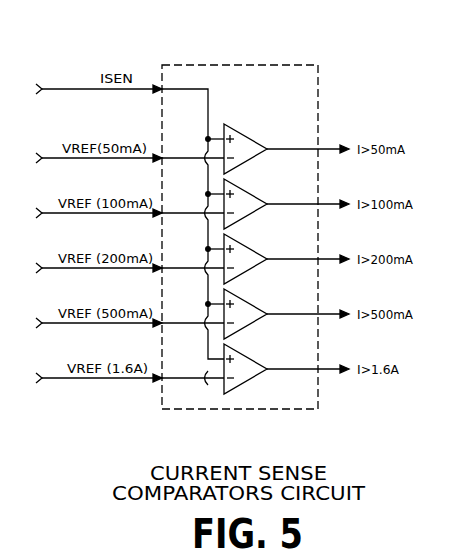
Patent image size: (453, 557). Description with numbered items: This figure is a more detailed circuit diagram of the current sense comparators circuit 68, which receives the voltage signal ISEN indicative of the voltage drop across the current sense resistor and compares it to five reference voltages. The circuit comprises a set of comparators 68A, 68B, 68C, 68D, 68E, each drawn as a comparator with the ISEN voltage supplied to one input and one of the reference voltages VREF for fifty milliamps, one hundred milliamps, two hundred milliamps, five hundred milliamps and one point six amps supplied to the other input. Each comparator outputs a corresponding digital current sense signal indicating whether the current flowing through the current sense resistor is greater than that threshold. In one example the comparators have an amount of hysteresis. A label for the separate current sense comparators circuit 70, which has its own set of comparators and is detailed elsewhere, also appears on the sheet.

The current sense comparators circuit 68 is at (232, 64).
The comparator 68A is at (247, 133).
The comparator 68B is at (247, 188).
The comparator 68C is at (249, 243).
The comparator 68D is at (249, 298).
The comparator 68E is at (247, 353).
The current sense comparators circuit 70 is at (65, 556).